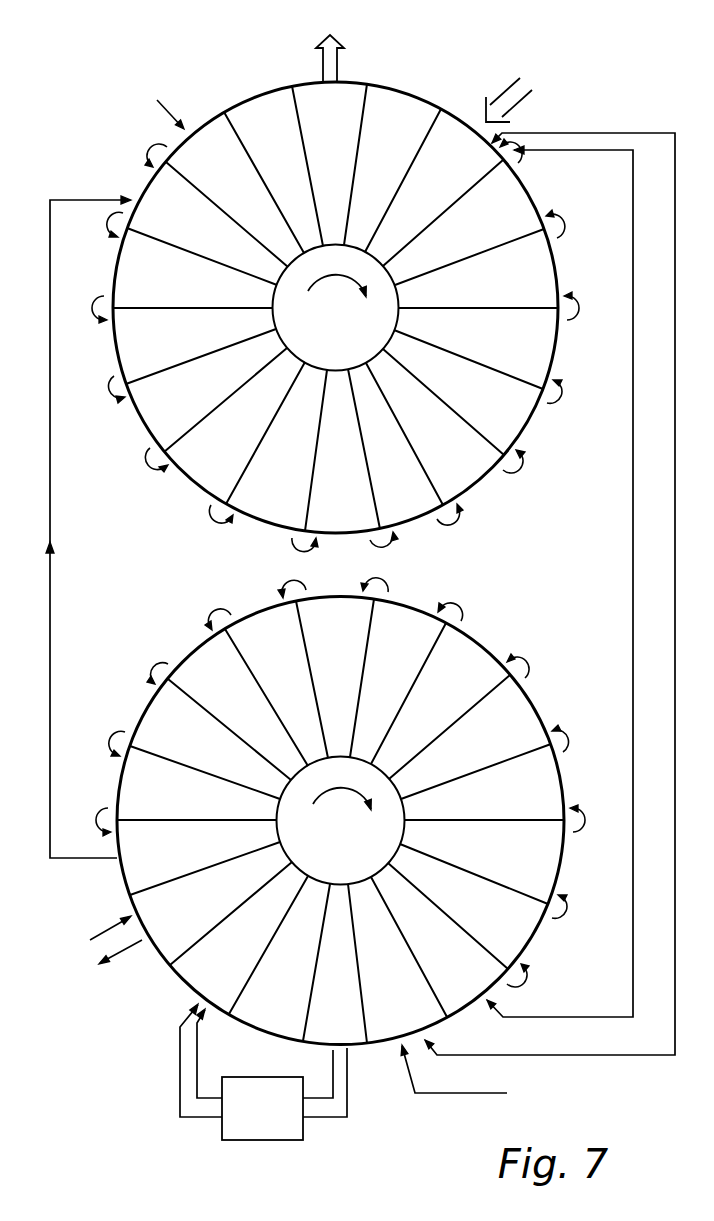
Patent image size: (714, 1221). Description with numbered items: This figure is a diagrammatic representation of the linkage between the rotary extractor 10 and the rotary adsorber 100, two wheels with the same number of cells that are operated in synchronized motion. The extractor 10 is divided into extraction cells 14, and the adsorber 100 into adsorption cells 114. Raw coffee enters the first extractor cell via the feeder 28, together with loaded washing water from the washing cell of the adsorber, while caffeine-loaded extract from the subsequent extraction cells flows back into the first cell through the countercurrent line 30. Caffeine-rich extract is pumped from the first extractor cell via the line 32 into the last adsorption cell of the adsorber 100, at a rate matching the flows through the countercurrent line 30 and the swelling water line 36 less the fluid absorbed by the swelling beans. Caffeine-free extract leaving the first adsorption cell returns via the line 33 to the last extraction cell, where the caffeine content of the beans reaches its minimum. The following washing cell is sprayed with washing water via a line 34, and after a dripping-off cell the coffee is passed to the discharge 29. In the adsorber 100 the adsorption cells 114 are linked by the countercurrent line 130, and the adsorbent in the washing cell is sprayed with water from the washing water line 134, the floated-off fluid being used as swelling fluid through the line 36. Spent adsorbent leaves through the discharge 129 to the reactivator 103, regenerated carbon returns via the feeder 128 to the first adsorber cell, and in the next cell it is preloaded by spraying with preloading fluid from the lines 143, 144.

The rotary extractor 10 is at (191, 489).
The extraction cells 14 is at (180, 228).
The feeder 28 is at (497, 92).
The discharge 29 is at (340, 62).
The countercurrent line 30 is at (548, 213).
The line 32 is at (633, 457).
The line 33 is at (50, 505).
The line 34 is at (163, 110).
The swelling water line 36 is at (675, 538).
The rotary adsorber 100 is at (191, 646).
The reactivator 103 is at (247, 1120).
The adsorption cells 114 is at (462, 976).
The feeder 128 is at (207, 1012).
The discharge 129 is at (348, 1052).
The countercurrent line 130 is at (528, 977).
The washing water line 134 is at (440, 1093).
The preloading fluid line 143 is at (124, 953).
The preloading fluid line 144 is at (107, 930).